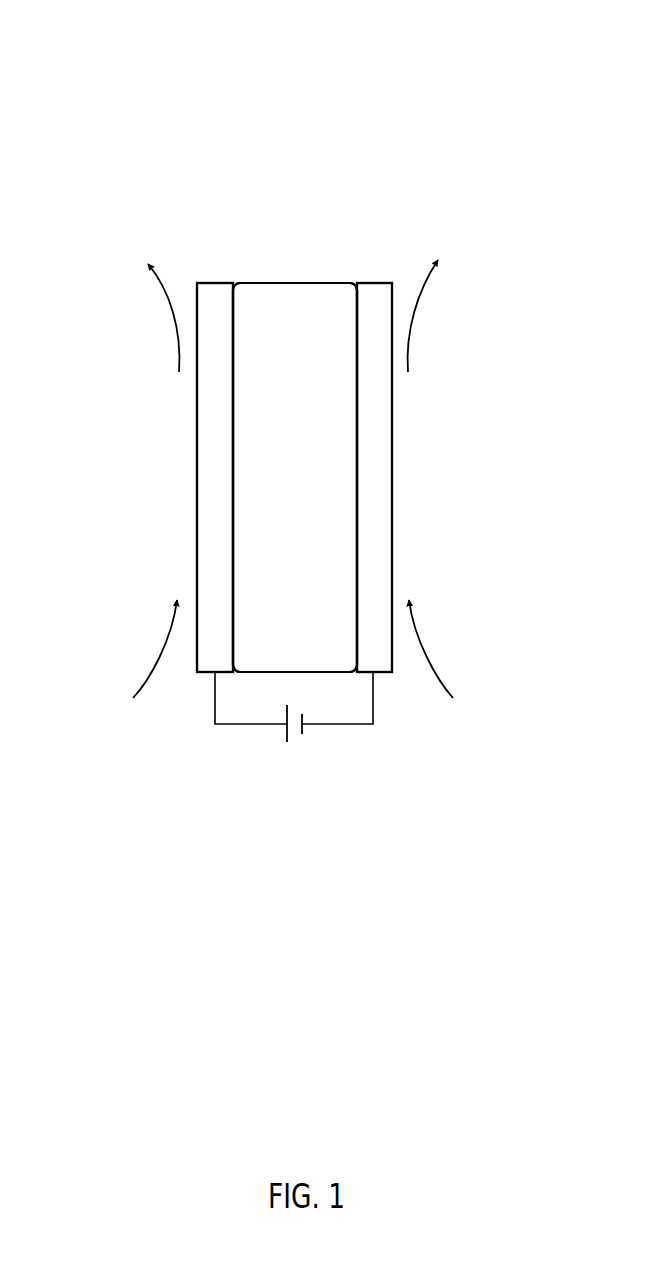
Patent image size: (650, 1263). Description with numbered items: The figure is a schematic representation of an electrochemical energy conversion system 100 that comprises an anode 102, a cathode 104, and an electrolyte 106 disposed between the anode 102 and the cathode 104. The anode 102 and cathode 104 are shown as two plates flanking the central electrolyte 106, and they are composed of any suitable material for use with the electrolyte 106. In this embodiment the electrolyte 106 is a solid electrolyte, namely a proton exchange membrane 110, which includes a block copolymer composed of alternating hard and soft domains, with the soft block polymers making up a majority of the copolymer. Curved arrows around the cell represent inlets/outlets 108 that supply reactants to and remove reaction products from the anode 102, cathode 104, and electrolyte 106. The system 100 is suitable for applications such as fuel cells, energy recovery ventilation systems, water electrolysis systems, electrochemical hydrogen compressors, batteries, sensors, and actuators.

The electrochemical energy conversion system 100 is at (205, 94).
The anode 102 is at (213, 281).
The cathode 104 is at (373, 281).
The electrolyte 106 is at (314, 489).
The inlets/outlets 108 is at (176, 336).
The proton exchange membrane 110 is at (293, 281).